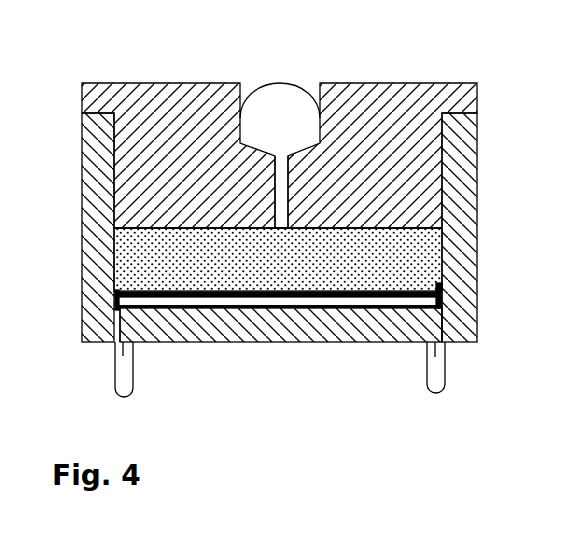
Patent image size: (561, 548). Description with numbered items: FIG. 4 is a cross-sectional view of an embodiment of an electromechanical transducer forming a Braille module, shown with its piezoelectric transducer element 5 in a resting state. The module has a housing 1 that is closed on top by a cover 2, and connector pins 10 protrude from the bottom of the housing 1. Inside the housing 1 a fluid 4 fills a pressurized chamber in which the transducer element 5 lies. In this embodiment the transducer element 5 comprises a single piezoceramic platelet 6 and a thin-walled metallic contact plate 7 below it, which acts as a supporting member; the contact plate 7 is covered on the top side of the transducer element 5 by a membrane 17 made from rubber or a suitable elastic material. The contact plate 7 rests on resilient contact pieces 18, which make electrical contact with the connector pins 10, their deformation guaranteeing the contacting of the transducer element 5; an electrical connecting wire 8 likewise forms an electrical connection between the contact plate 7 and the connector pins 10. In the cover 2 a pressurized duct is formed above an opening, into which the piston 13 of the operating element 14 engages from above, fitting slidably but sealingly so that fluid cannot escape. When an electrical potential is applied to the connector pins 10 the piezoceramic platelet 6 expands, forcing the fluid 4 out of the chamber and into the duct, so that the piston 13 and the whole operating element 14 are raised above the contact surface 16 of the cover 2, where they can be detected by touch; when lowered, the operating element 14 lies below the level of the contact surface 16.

The housing 1 is at (251, 179).
The cover 2 is at (125, 204).
The fluid 4 is at (427, 220).
The piezoelectric transducer element 5 is at (373, 298).
The piezoceramic platelet 6 is at (415, 300).
The metallic contact plate 7 is at (125, 317).
The electrical connecting wire 8 is at (115, 343).
The connector pins 10 is at (123, 377).
The piston 13 is at (275, 188).
The operating element 14 is at (277, 122).
The contact surface 16 is at (251, 134).
The membrane 17 is at (367, 252).
The contact pieces 18 is at (120, 310).